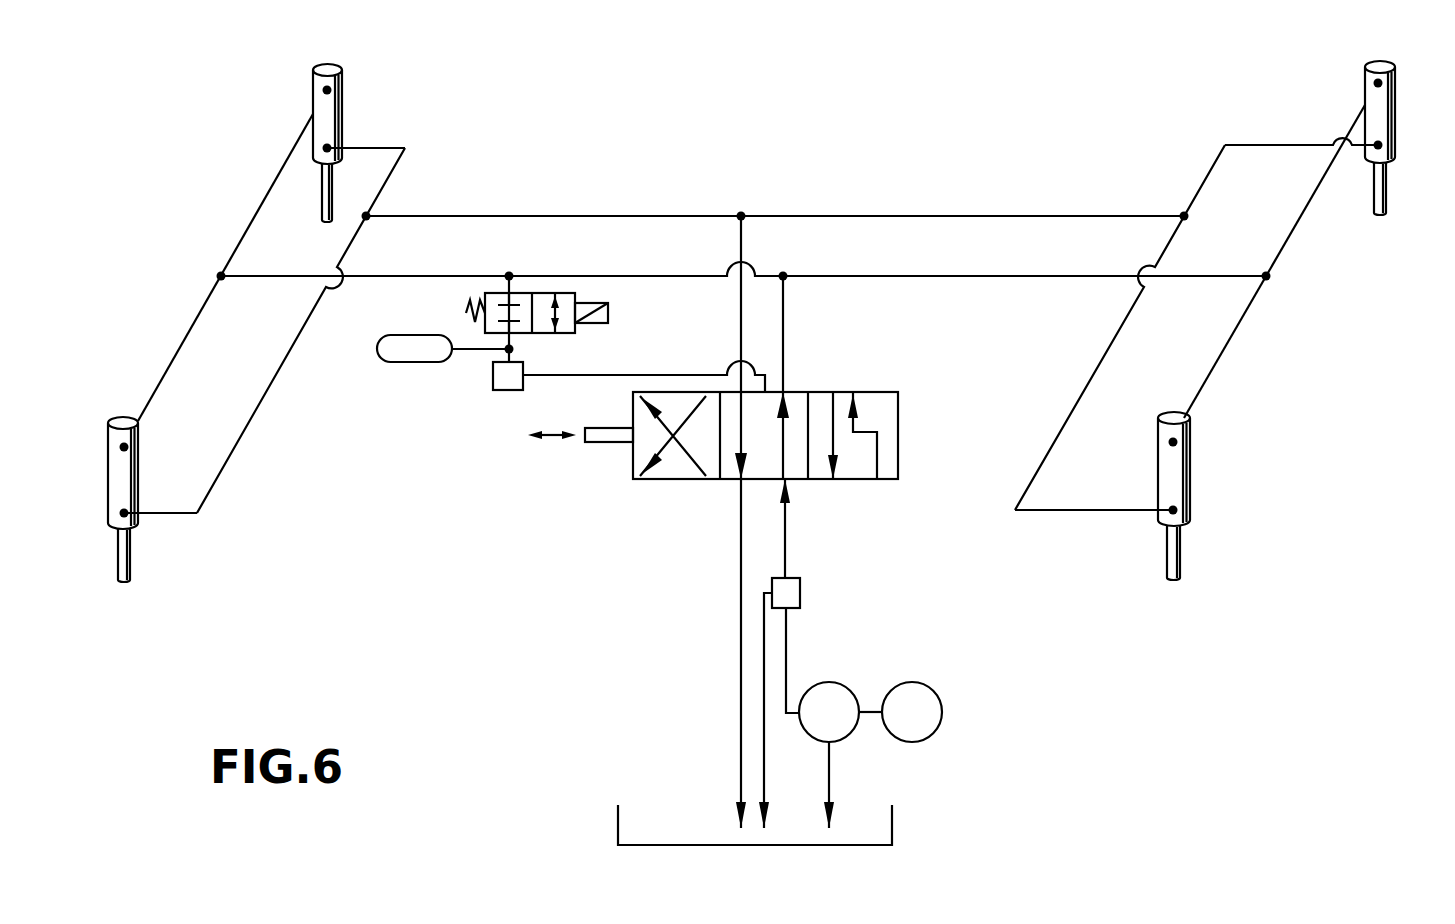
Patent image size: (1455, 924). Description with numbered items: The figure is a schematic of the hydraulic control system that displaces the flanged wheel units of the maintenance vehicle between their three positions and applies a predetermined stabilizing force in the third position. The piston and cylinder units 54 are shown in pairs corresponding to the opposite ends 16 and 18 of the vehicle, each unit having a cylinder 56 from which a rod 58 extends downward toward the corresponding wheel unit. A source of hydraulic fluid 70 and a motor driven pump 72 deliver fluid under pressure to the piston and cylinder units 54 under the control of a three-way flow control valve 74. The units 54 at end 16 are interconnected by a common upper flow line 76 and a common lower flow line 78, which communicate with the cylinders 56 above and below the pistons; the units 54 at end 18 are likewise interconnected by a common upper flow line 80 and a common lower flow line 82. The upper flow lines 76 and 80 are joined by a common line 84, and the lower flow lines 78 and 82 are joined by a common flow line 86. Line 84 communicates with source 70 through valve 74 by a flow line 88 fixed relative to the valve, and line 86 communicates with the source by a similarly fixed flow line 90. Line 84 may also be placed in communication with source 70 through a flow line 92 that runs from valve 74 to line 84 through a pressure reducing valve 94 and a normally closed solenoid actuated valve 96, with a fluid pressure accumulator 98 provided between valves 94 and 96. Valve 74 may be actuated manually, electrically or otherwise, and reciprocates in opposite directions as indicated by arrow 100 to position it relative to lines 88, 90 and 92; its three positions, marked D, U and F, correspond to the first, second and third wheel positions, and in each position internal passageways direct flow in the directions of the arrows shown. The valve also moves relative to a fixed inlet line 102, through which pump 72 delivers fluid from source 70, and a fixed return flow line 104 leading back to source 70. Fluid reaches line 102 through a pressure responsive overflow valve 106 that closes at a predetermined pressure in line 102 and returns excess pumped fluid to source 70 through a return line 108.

The end of maintenance vehicle 16 is at (264, 313).
The end of maintenance vehicle 18 is at (1196, 307).
The piston and cylinder unit 54 is at (350, 91).
The cylinder 56 is at (332, 127).
The piston rod 58 is at (322, 205).
The source of hydraulic fluid 70 is at (915, 797).
The motor driven pump 72 is at (832, 682).
The three-way flow control valve 74 is at (920, 437).
The common upper flow line 76 is at (255, 215).
The common lower flow line 78 is at (252, 420).
The common upper flow line 80 is at (1242, 319).
The common lower flow line 82 is at (1132, 305).
The common line 84 is at (868, 276).
The common flow line 86 is at (877, 216).
The flow line 88 is at (785, 330).
The flow line 90 is at (741, 240).
The flow line 92 is at (630, 375).
The pressure reducing valve 94 is at (493, 380).
The normally closed solenoid actuated valve 96 is at (545, 333).
The fluid pressure accumulator 98 is at (402, 362).
The arrow 100 is at (553, 441).
The fixed inlet line 102 is at (786, 557).
The fixed return flow line 104 is at (741, 549).
The pressure responsive overflow valve 106 is at (800, 593).
The return line 108 is at (764, 735).